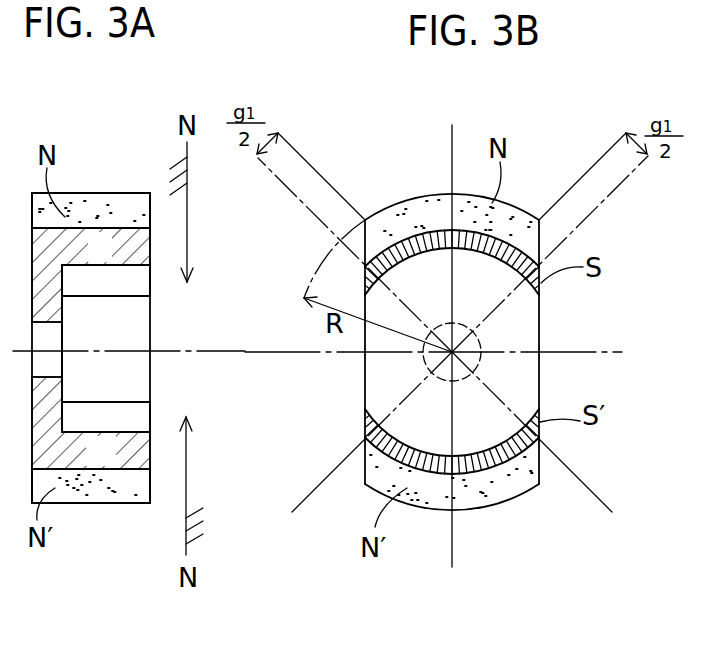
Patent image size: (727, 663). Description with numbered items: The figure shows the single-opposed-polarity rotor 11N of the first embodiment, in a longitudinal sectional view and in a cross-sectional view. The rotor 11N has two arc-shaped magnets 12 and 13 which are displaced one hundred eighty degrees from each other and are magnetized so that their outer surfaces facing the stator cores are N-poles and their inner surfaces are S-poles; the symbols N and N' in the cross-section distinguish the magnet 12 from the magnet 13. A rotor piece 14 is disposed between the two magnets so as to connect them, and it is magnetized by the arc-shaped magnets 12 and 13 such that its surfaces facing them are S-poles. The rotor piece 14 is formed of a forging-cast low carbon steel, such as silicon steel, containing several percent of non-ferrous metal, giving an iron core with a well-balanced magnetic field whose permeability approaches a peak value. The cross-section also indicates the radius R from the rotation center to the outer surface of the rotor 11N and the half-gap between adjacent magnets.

In FIG. 3A, the arc-shaped magnet 12 is at (97, 210).
In FIG. 3B, the arc-shaped magnet 12 is at (410, 216).
In FIG. 3A, the arc-shaped magnet 13 is at (98, 490).
In FIG. 3B, the arc-shaped magnet 13 is at (487, 486).
In FIG. 3A, the rotor piece 14 is at (47, 388).
In FIG. 3B, the rotor piece 14 is at (510, 332).
In FIG. 3B, the single-opposed-polarity rotor 11N is at (521, 343).